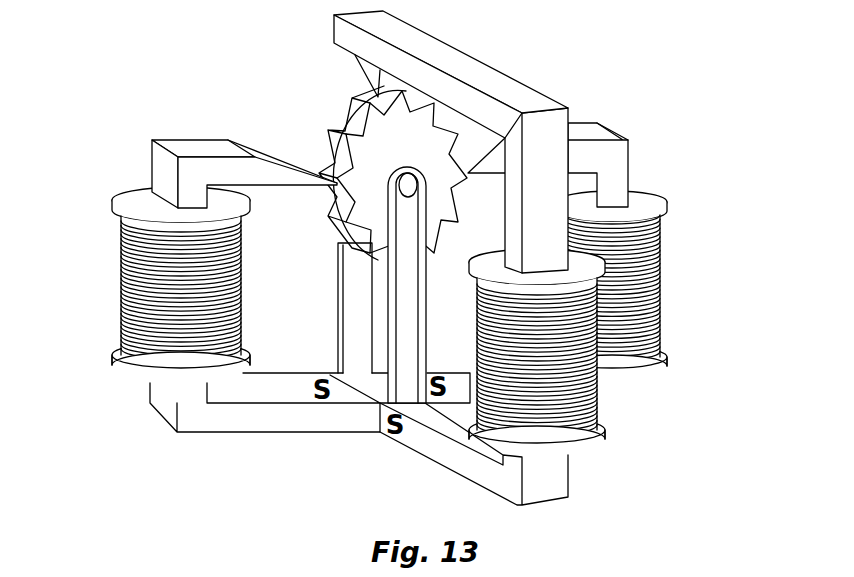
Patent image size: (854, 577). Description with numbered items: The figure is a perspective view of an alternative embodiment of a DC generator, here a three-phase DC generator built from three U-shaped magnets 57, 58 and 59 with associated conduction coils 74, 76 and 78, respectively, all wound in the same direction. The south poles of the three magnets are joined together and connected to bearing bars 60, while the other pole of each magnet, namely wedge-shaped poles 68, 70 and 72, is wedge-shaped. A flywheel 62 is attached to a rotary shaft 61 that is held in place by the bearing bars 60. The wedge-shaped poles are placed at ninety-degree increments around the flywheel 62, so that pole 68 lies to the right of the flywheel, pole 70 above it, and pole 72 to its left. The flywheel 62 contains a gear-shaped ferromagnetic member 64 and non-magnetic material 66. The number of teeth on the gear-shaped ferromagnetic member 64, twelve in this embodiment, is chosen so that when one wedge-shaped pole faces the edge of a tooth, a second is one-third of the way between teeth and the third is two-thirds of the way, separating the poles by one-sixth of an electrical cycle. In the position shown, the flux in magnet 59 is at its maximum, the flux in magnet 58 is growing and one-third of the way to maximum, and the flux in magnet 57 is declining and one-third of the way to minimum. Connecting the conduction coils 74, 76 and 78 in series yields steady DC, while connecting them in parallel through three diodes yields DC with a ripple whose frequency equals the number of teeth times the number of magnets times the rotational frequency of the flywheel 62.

The U-shaped magnet 57 is at (613, 172).
The U-shaped magnet 58 is at (507, 93).
The U-shaped magnet 59 is at (204, 151).
The bearing bars 60 is at (357, 337).
The rotary shaft 61 is at (407, 173).
The flywheel 62 is at (324, 157).
The gear-shaped ferromagnetic member 64 is at (357, 233).
The non-magnetic material 66 is at (325, 210).
The wedge-shaped pole 68 is at (485, 160).
The wedge-shaped pole 70 is at (360, 72).
The wedge-shaped pole 72 is at (300, 170).
The conduction coil 74 is at (660, 343).
The conduction coil 76 is at (580, 443).
The conduction coil 78 is at (128, 370).